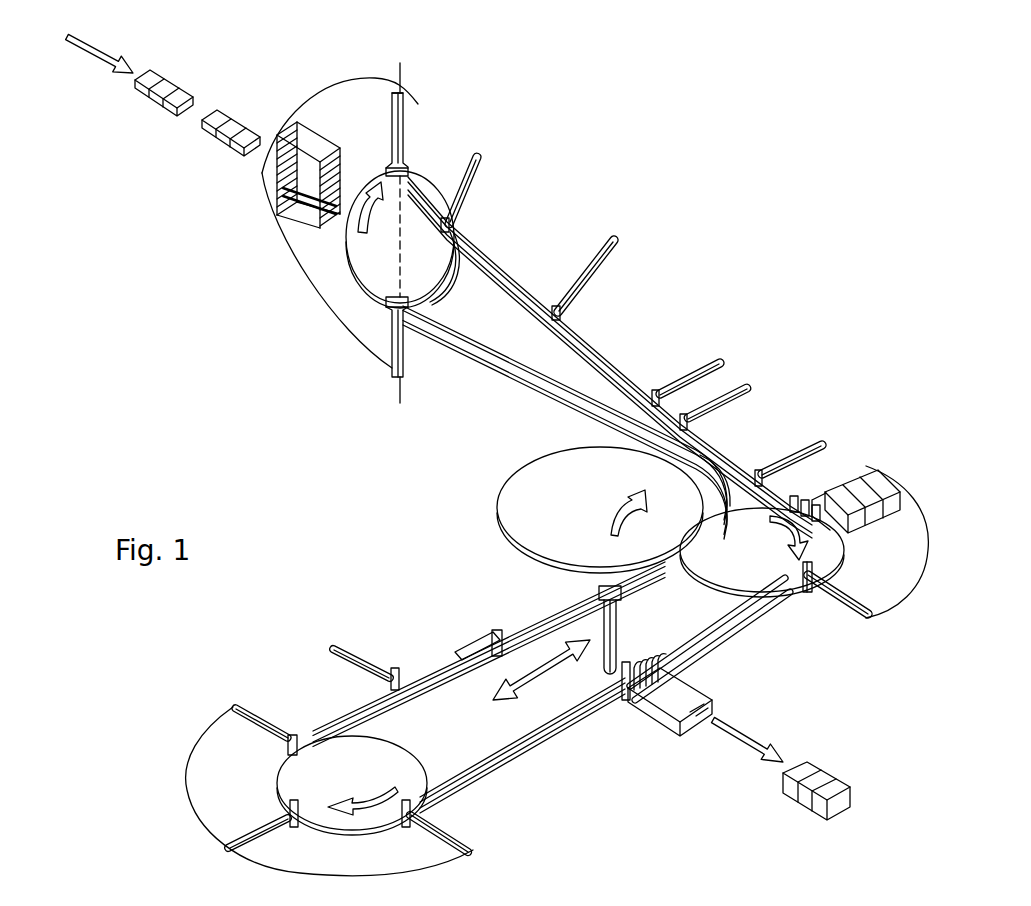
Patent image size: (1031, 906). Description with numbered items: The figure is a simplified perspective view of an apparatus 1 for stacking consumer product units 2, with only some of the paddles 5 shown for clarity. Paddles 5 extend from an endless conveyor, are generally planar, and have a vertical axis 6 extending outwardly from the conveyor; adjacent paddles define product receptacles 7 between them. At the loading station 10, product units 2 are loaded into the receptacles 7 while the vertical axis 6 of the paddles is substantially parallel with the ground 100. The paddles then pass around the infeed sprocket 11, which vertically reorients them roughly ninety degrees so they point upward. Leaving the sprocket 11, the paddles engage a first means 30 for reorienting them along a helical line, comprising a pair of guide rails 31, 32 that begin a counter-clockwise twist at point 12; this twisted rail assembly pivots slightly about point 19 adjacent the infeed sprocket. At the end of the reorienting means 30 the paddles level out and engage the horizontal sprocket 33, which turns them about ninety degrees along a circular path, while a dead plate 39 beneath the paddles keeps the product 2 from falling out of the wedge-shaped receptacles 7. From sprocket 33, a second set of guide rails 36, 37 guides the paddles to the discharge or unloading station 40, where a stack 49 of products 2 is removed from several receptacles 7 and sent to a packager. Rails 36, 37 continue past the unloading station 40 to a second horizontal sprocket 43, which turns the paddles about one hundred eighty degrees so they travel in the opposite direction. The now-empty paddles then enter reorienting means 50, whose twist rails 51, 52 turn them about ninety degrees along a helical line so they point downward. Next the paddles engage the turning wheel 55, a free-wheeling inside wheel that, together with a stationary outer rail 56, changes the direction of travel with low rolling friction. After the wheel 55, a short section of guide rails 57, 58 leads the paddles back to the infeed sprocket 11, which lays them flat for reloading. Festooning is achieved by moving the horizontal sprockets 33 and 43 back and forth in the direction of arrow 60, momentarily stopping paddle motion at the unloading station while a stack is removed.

The apparatus 1 is at (748, 207).
The product units 2 is at (178, 80).
The paddles 5 is at (412, 100).
The vertical axis 6 is at (402, 72).
The product receptacles 7 is at (280, 168).
The loading station 10 is at (190, 157).
The sprocket 11 is at (350, 252).
The point 12 is at (510, 263).
The point 19 is at (428, 186).
The first means for reorienting the paddles 30 is at (603, 347).
The guide rail 31 is at (463, 240).
The guide rail 32 is at (480, 230).
The horizontal sprocket 33 is at (820, 550).
The guide rail 36 is at (727, 613).
The guide rail 37 is at (715, 645).
The dead plate 39 is at (903, 525).
The discharge station 40 is at (760, 727).
The second horizontal sprocket 43 is at (270, 775).
The stack 49 is at (833, 787).
The means for reorienting the paddles 50 is at (467, 632).
The guide rail 51 is at (467, 657).
The guide rail 52 is at (423, 692).
The turning wheel 55 is at (497, 510).
The outer rail 56 is at (703, 473).
The guide rail 57 is at (477, 333).
The guide rail 58 is at (540, 393).
The arrow 60 is at (528, 693).
The ground 100 is at (400, 448).